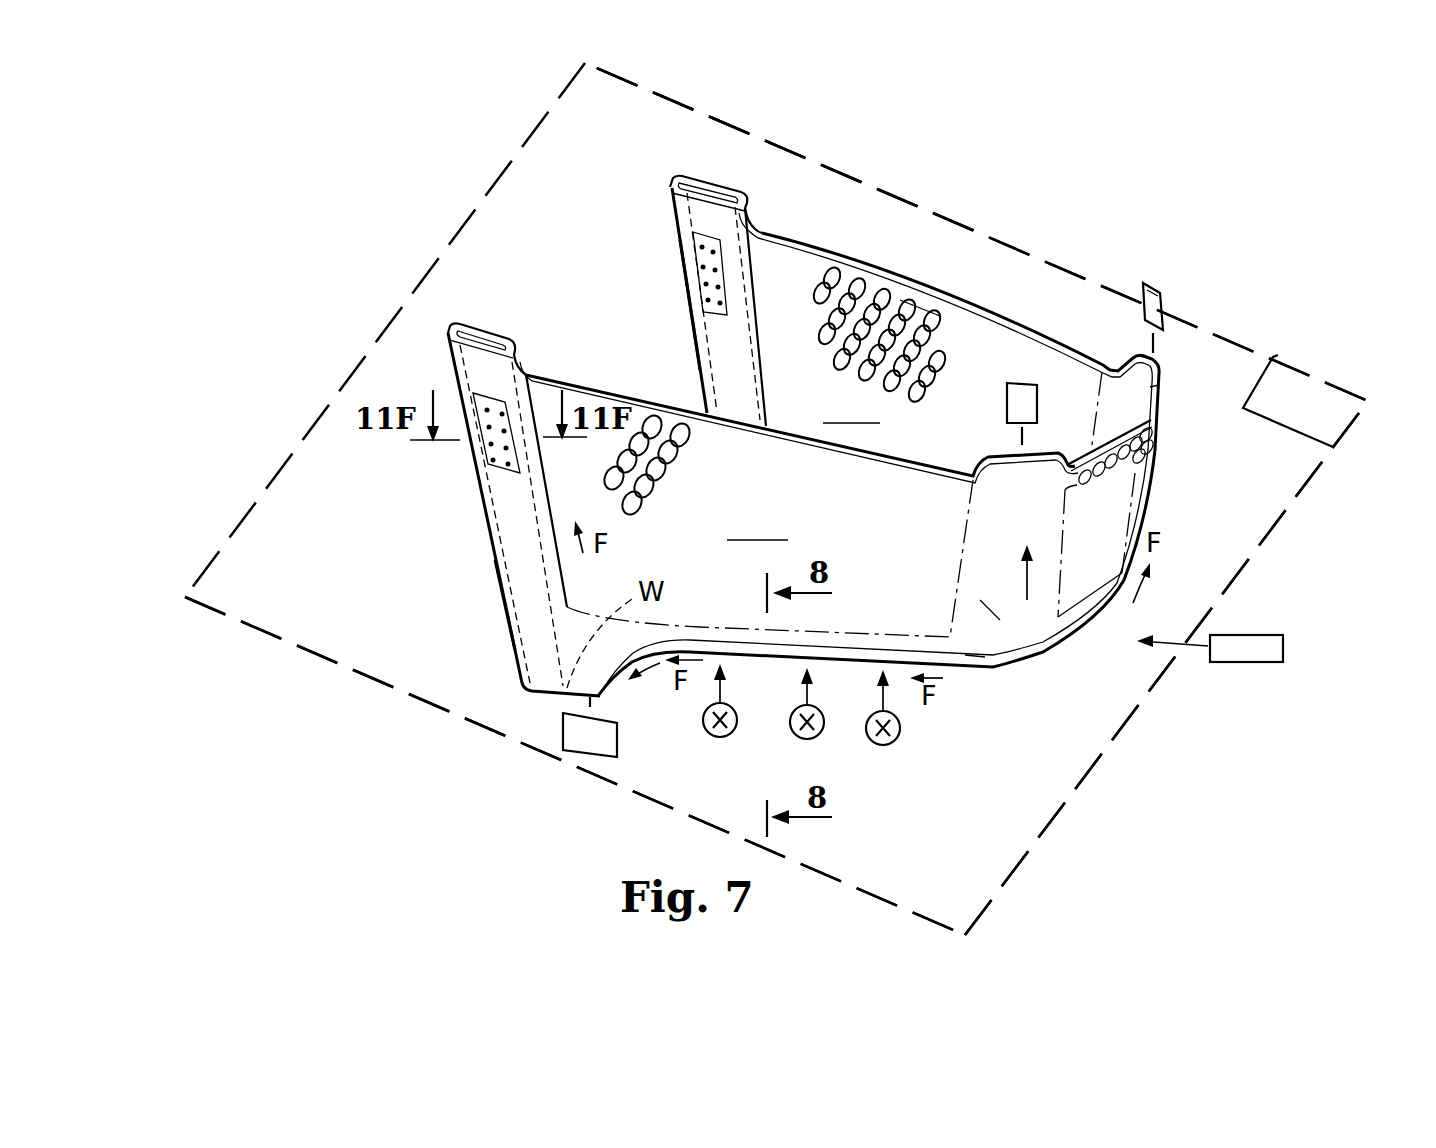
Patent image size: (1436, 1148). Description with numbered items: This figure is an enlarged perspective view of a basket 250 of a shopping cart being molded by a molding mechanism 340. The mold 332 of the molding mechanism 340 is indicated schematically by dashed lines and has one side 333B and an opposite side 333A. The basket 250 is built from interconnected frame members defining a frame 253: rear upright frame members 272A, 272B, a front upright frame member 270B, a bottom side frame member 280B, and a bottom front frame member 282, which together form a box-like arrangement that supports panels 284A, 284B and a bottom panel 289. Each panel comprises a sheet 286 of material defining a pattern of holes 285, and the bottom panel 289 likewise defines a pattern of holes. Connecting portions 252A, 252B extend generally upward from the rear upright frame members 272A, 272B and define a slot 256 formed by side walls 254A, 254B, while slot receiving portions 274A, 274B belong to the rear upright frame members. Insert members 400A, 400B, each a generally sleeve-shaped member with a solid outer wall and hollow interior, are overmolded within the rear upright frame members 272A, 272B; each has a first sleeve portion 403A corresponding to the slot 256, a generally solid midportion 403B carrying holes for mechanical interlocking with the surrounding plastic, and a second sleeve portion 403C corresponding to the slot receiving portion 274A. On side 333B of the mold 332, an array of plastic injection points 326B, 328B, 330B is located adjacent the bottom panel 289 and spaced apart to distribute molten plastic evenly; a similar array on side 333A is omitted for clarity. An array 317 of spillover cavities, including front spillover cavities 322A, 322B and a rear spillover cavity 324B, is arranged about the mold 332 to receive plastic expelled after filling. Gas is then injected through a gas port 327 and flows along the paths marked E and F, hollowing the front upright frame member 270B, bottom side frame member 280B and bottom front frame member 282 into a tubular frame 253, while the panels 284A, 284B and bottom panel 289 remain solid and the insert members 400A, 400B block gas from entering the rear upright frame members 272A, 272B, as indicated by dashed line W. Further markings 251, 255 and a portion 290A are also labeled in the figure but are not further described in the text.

The basket 250 is at (1035, 322).
The direction of gas flow 251 is at (1236, 540).
The connecting portion 252A is at (676, 213).
The connecting portion 252B is at (447, 362).
The frame 253 is at (1027, 617).
The corner portion 254A is at (1157, 378).
The corner apertures 254B is at (1140, 466).
The mold boundary 255 is at (328, 447).
The slot 256 is at (707, 187).
The front upright frame member 270B is at (990, 610).
The rear upright frame member 272A is at (684, 317).
The rear upright frame member 272B is at (475, 490).
The slot receiving portion 274A is at (717, 377).
The slot receiving portion 274B is at (552, 690).
The bottom side frame member 280B is at (847, 663).
The bottom front frame member 282 is at (1083, 627).
The panel 284A is at (856, 408).
The panel 284B is at (799, 499).
The holes 285 is at (858, 290).
The sheet 286 is at (920, 303).
The bottom panel 289 is at (973, 665).
The rim transition 290A is at (732, 267).
The array of spillover cavities 317 is at (1176, 301).
The front spillover cavity 322A is at (1197, 270).
The front spillover cavity 322B is at (1007, 403).
The rear spillover cavity 324B is at (583, 743).
The plastic injection point 326B is at (726, 717).
The gas port 327 is at (1287, 650).
The plastic injection point 328B is at (811, 721).
The plastic injection point 330B is at (895, 724).
The mold 332 is at (773, 143).
The side of mold 333A is at (960, 225).
The side of mold 333B is at (312, 655).
The molding mechanism 340 is at (1313, 368).
The insert member 400A is at (686, 271).
The insert member 400B is at (505, 600).
The first sleeve portion 403A is at (704, 205).
The generally solid midportion 403B is at (727, 283).
The second sleeve portion 403C is at (727, 357).